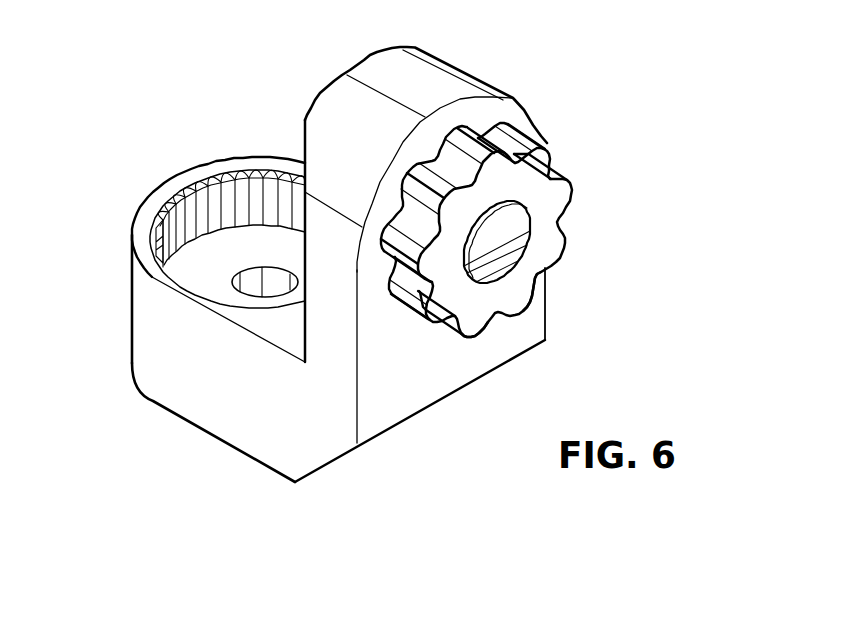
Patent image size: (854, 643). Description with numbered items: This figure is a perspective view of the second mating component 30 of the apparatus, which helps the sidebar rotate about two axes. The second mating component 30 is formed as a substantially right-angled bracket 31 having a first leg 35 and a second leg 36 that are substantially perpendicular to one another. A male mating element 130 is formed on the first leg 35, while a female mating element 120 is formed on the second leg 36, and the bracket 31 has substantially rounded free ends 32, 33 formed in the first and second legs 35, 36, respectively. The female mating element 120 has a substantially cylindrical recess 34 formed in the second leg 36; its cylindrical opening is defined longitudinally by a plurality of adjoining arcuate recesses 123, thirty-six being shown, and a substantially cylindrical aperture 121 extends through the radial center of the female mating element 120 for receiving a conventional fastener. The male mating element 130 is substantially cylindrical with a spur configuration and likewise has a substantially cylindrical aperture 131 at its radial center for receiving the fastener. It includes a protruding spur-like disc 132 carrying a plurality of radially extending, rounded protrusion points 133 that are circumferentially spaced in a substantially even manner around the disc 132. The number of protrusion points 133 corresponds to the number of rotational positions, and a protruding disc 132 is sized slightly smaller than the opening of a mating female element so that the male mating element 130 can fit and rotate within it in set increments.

The second mating component 30 is at (607, 140).
The substantially right-angled bracket 31 is at (323, 397).
The rounded free end 32 is at (435, 80).
The rounded free end 33 is at (150, 317).
The substantially cylindrical recess 34 is at (262, 256).
The first leg 35 is at (333, 307).
The second leg 36 is at (200, 370).
The female mating element 120 is at (212, 204).
The substantially cylindrical aperture 121 is at (273, 284).
The arcuate recesses 123 is at (170, 212).
The male mating element 130 is at (547, 207).
The substantially cylindrical aperture 131 is at (512, 238).
The protruding spur-like disc 132 is at (510, 293).
The protrusion points 133 is at (462, 340).